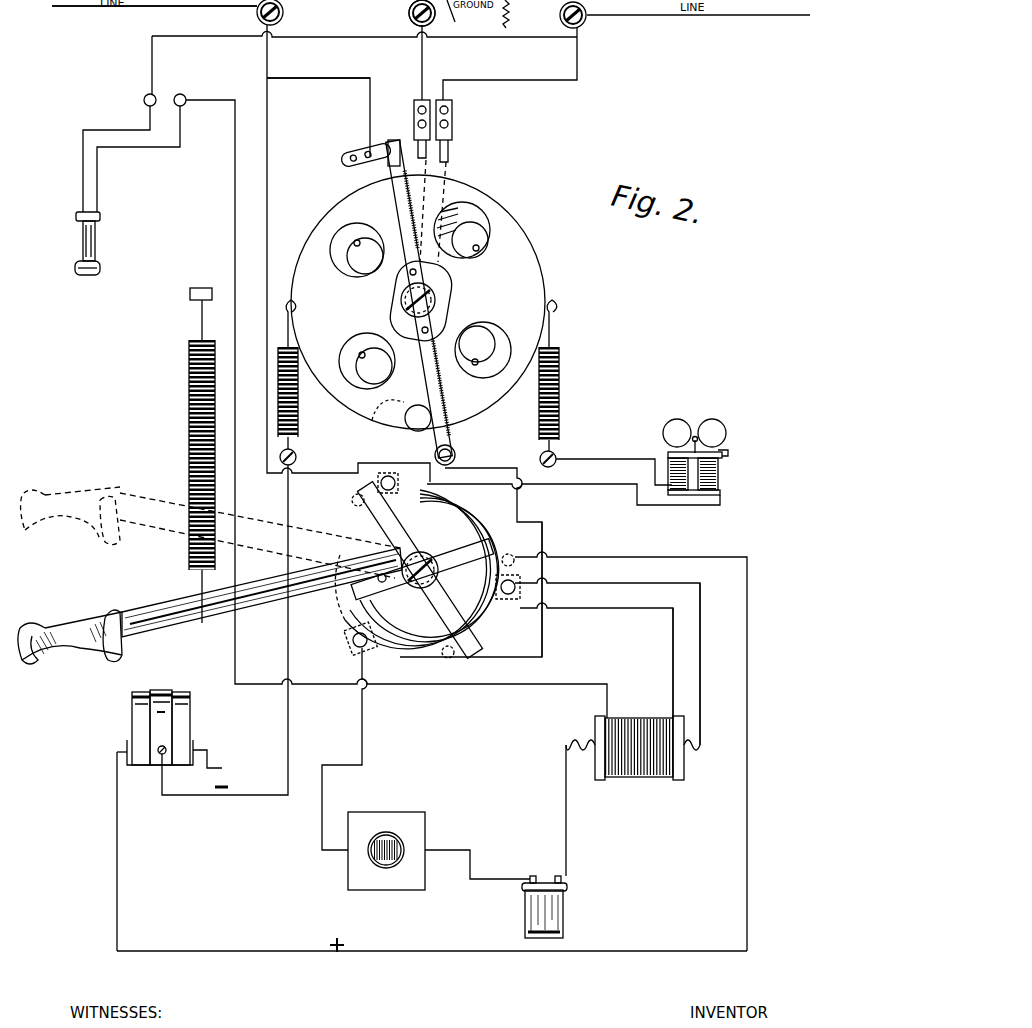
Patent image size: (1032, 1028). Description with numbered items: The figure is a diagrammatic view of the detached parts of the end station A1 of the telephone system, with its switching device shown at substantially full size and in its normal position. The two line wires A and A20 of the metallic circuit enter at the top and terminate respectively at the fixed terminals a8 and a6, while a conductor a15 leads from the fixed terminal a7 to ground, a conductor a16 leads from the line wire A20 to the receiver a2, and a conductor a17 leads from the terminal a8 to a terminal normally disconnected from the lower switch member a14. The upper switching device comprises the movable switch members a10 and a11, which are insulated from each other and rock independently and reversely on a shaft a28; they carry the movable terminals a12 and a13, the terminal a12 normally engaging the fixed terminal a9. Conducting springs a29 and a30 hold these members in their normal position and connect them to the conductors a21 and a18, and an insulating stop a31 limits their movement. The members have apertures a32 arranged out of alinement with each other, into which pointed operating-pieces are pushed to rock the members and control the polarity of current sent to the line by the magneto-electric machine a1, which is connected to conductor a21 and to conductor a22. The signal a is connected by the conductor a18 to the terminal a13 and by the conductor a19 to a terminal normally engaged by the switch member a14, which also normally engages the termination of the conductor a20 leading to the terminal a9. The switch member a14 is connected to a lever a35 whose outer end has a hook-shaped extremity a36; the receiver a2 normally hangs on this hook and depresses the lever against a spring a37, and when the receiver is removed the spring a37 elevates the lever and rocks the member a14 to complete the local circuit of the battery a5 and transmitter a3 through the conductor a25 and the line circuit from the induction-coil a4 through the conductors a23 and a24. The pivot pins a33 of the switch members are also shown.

The responsive device or signal a is at (718, 470).
The magneto-electric machine a1 is at (160, 700).
The receiver a2 is at (88, 236).
The transmitter a3 is at (413, 845).
The induction-coil a4 is at (640, 712).
The battery a5 is at (563, 912).
The fixed terminal a6 is at (450, 132).
The fixed terminal a7 is at (418, 137).
The fixed terminal a8 is at (350, 150).
The fixed terminal a9 is at (455, 458).
The movable switch member a10 is at (418, 302).
The movable switch member a11 is at (462, 230).
The movable terminal a12 is at (385, 170).
The movable terminal a13 is at (440, 170).
The movable switch member a14 is at (380, 520).
The conductor a15 is at (435, 26).
The conductor a16 is at (169, 46).
The conductor a17 is at (268, 418).
The conductor a18 is at (605, 462).
The conductor a19 is at (588, 495).
The conductor a20 is at (542, 522).
The conductor a21 is at (287, 746).
The conductor a22 is at (282, 934).
The conductor a23 is at (672, 652).
The conductor a24 is at (700, 650).
The conductor a25 is at (363, 745).
The shaft a28 is at (437, 298).
The spring a29 is at (300, 420).
The spring a30 is at (560, 405).
The stop a31 is at (410, 428).
The apertures a32 is at (368, 281).
The pivot pin a33 is at (360, 356).
The lever a35 is at (268, 598).
The hook-shaped extremity a36 is at (58, 630).
The spring a37 is at (188, 466).
The line wire A is at (318, 70).
The station A1 is at (155, 8).
The line wire A20 is at (578, 68).